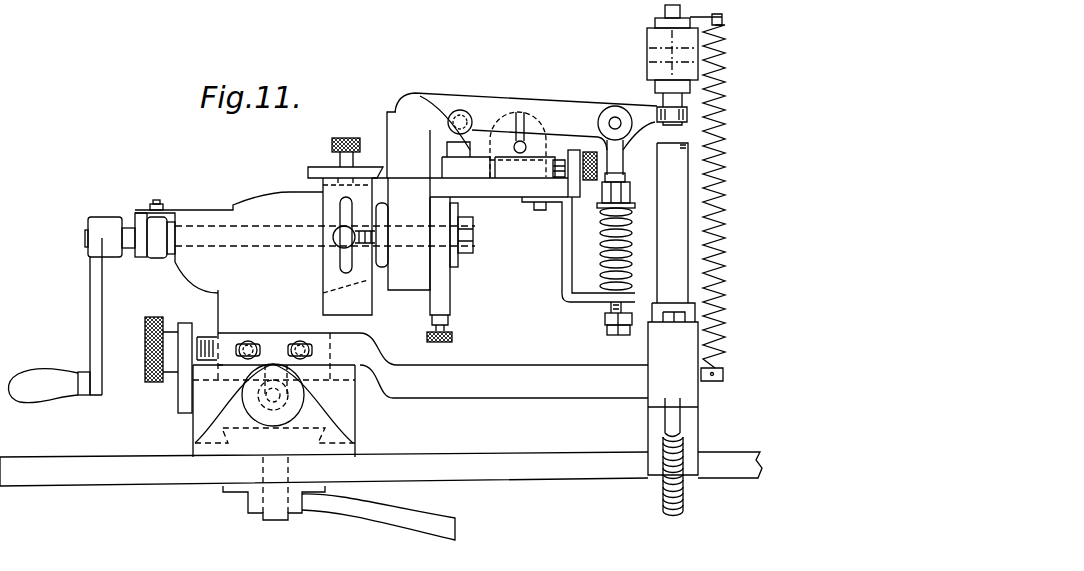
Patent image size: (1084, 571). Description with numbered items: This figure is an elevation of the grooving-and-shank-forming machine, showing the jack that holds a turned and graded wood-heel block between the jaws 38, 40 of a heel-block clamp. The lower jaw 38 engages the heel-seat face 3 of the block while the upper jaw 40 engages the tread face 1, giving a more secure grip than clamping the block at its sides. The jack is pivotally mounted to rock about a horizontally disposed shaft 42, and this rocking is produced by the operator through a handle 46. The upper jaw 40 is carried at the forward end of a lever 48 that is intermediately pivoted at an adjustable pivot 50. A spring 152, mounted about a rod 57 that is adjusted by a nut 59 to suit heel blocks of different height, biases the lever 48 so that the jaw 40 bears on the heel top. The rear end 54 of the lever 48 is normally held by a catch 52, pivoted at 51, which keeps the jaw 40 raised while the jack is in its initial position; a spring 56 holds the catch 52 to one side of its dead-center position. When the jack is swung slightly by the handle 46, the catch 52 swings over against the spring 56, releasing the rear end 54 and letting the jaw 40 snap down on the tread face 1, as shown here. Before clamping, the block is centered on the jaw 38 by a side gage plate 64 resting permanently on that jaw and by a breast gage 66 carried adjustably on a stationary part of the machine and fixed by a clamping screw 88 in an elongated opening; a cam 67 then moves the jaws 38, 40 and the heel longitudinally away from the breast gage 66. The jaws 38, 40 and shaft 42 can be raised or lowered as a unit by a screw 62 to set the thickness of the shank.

The tread face 1 is at (402, 115).
The heel-seat face 3 is at (427, 177).
The jaw 38 is at (410, 183).
The jaw 40 is at (412, 103).
The shaft 42 is at (477, 243).
The handle 46 is at (40, 376).
The lever 48 is at (592, 104).
The pivot 50 is at (463, 110).
The pivot 51 is at (650, 46).
The catch 52 is at (678, 101).
The rear end of lever 54 is at (656, 112).
The spring 56 is at (727, 181).
The rod 57 is at (608, 311).
The nut 59 is at (606, 335).
The screw 62 is at (455, 338).
The side gage plate 64 is at (418, 108).
The breast gage 66 is at (321, 166).
The cam 67 is at (147, 245).
The clamping screw 88 is at (350, 136).
The spring 152 is at (607, 252).